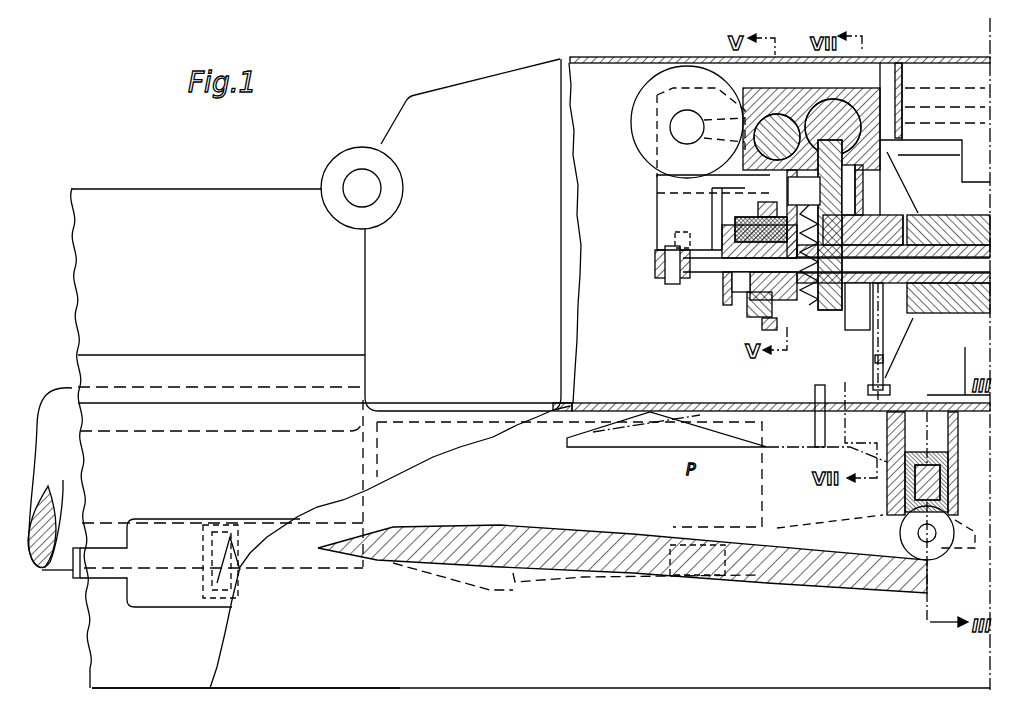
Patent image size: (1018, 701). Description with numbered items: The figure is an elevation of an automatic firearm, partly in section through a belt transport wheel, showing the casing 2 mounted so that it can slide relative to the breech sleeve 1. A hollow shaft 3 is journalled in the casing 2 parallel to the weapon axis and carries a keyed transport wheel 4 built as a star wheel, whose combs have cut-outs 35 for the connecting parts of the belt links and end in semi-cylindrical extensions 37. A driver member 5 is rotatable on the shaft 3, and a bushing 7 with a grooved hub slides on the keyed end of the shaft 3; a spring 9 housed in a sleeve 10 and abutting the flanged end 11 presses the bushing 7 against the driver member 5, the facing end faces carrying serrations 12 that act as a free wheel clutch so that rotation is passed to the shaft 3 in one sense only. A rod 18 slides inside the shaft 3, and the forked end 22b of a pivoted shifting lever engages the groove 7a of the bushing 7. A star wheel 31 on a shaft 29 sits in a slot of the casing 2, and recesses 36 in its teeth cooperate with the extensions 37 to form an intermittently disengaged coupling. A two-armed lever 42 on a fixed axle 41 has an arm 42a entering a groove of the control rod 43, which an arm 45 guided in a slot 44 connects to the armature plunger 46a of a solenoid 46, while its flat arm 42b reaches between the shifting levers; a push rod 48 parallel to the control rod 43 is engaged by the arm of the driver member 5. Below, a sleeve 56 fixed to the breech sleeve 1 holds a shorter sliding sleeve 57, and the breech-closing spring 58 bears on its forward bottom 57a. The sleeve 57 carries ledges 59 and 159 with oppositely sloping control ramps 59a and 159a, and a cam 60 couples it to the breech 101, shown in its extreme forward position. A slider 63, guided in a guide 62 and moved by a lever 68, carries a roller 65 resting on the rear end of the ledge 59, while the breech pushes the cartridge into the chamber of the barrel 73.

The breech sleeve 1 is at (726, 690).
The casing 2 is at (592, 67).
The hollow shaft 3 is at (950, 302).
The transport wheel 4 is at (975, 306).
The driver member 5 is at (832, 322).
The bushing 7 is at (752, 318).
The groove 7a is at (783, 330).
The spring 9 is at (750, 302).
The sleeve 10 is at (712, 220).
The flanged end 11 is at (728, 297).
The serrations 12 is at (812, 324).
The rod 18 is at (928, 262).
The lever arm 22b is at (790, 345).
The shaft 29 is at (897, 326).
The star wheel 31 is at (878, 348).
The cut-outs 35 is at (972, 135).
The recesses 36 is at (888, 375).
The semi-cylindrical extensions 37 is at (889, 132).
The axle 41 is at (664, 236).
The two-armed lever 42 is at (700, 195).
The lever arm 42a is at (718, 183).
The lever arm 42b is at (716, 290).
The control rod 43 is at (797, 128).
The slot 44 is at (742, 100).
The arm 45 is at (718, 115).
The solenoid 46 is at (668, 84).
The armature plunger 46a is at (672, 118).
The push rod 48 is at (835, 108).
The sleeve 56 is at (142, 511).
The sleeve 57 is at (237, 528).
The forward bottom 57a is at (208, 556).
The breech-closing spring 58 is at (236, 550).
The ledge 59 is at (800, 586).
The control ramp 59a is at (606, 535).
The cam 60 is at (702, 578).
The guide 62 is at (955, 425).
The slider 63 is at (958, 457).
The roller 65 is at (950, 527).
The lever 68 is at (958, 485).
The barrel 73 is at (60, 563).
The breech 101 is at (375, 453).
The ledge 159 is at (810, 528).
The control ramp 159a is at (830, 527).